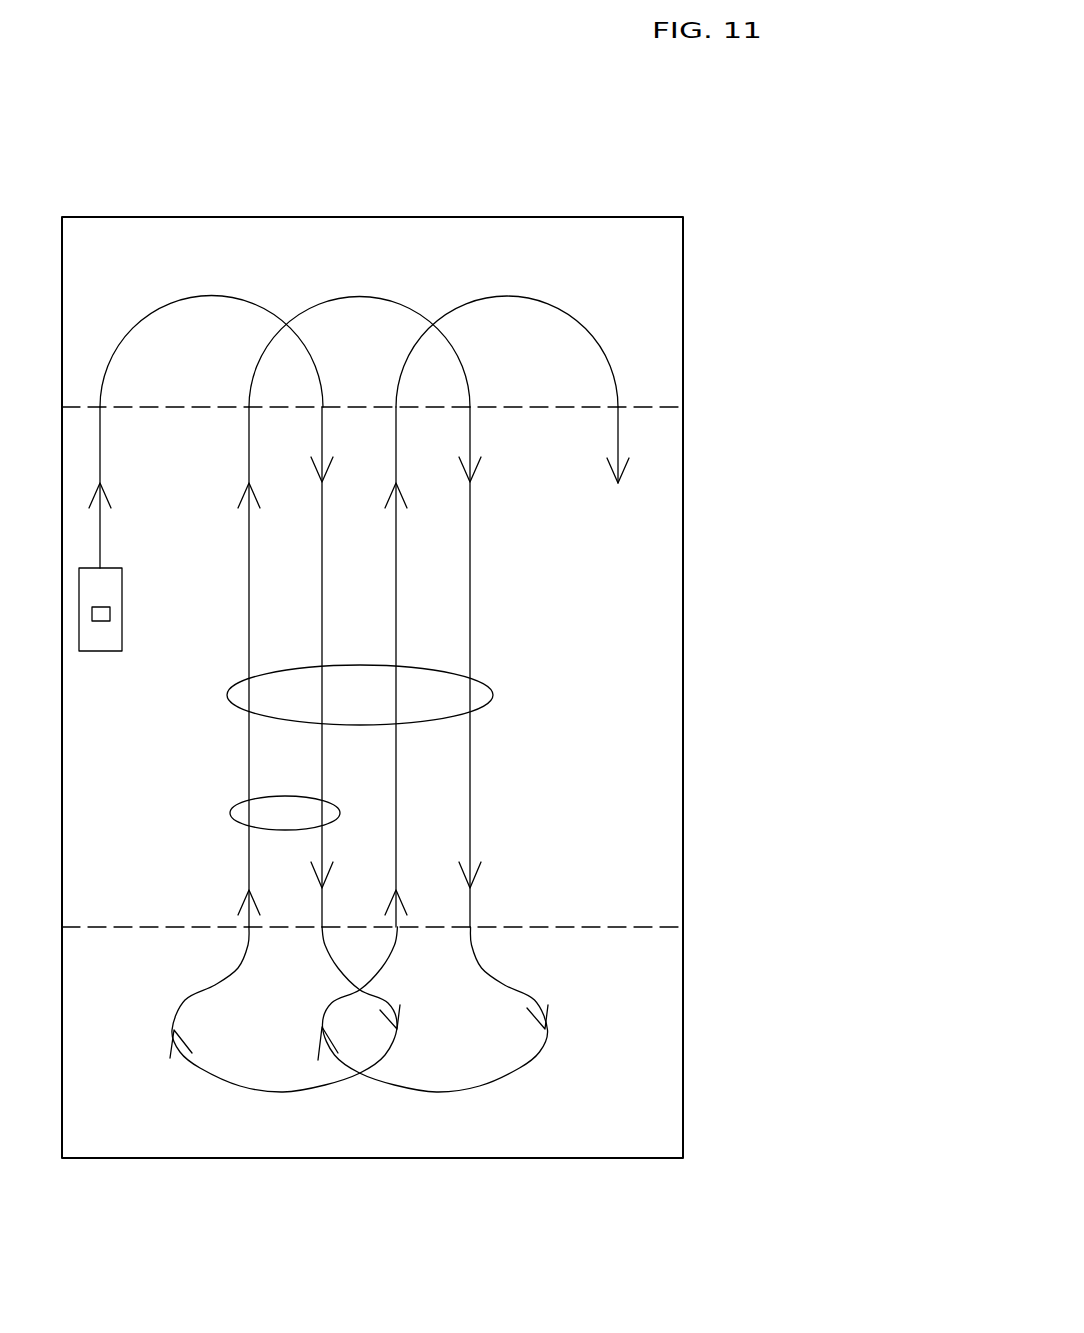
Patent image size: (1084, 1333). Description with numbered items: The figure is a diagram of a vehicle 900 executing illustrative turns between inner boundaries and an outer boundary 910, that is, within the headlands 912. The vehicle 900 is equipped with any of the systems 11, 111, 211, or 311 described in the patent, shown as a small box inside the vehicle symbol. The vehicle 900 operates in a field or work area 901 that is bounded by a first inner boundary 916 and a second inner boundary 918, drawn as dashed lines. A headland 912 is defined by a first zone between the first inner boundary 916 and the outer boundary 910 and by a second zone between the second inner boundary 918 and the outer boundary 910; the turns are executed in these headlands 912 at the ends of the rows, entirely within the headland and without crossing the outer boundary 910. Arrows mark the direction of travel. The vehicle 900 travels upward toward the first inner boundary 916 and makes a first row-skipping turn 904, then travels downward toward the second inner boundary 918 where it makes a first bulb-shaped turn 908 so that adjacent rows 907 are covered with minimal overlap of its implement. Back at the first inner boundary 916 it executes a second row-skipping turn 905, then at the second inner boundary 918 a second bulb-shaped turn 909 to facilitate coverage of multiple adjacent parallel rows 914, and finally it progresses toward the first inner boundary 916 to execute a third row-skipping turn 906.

The system 11 is at (164, 653).
The system 111 is at (101, 614).
The system 211 is at (101, 614).
The system 311 is at (110, 615).
The vehicle 900 is at (157, 666).
The field or work area 901 is at (458, 667).
The first row-skipping turn 904 is at (197, 297).
The second row-skipping turn 905 is at (380, 296).
The third row-skipping turn 906 is at (512, 296).
The adjacent rows 907 is at (237, 828).
The first bulb-shaped turn 908 is at (255, 1091).
The second bulb-shaped turn 909 is at (422, 1091).
The outer boundary 910 is at (602, 217).
The headland 912 is at (451, 661).
The adjacent parallel rows 914 is at (487, 692).
The first inner boundary 916 is at (643, 407).
The second inner boundary 918 is at (625, 927).